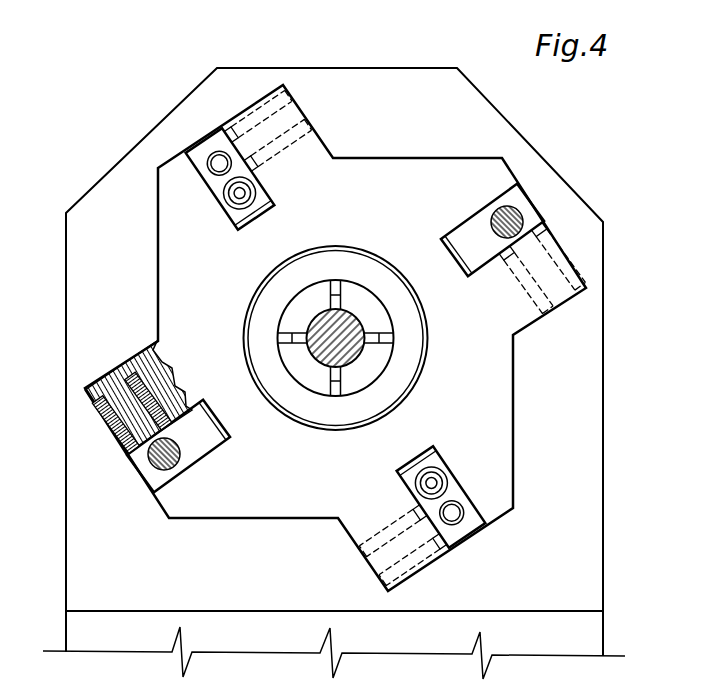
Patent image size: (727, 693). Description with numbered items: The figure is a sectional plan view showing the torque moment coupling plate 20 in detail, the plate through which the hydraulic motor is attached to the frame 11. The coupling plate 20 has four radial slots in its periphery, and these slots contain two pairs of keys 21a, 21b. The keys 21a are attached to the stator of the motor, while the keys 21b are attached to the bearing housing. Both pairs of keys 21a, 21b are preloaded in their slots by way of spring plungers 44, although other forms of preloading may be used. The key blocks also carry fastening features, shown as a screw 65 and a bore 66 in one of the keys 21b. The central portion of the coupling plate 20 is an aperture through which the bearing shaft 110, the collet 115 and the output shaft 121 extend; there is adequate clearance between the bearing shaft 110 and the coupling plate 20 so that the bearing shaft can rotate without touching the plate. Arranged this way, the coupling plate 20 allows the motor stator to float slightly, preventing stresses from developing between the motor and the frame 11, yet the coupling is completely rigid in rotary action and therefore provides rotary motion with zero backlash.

The frame 11 is at (349, 68).
The coupling plate 20 is at (513, 365).
The keys 21a is at (536, 213).
The keys 21b is at (202, 148).
The spring plungers 44 is at (110, 417).
The screw 65 is at (436, 471).
The bore 66 is at (457, 506).
The bearing shaft 110 is at (413, 314).
The collet 115 is at (353, 290).
The output shaft 121 is at (358, 357).